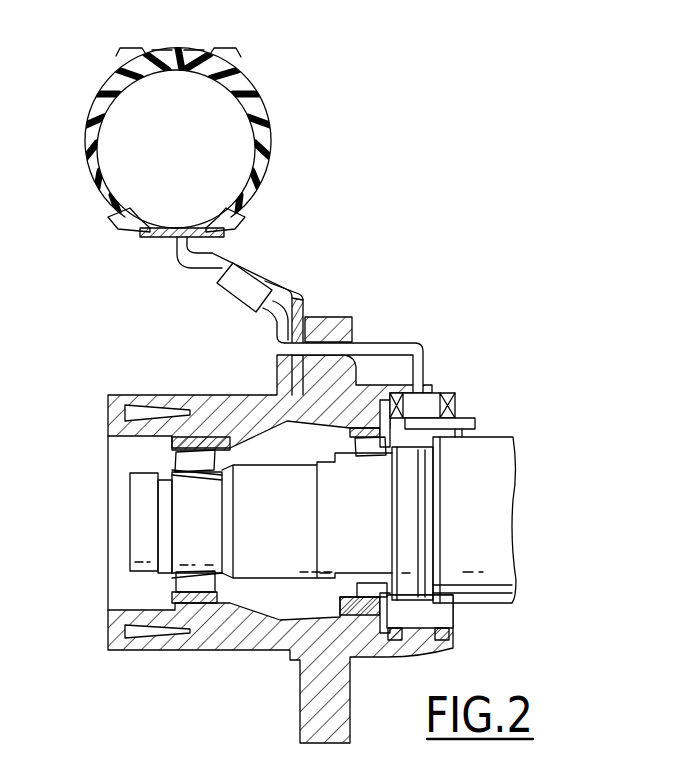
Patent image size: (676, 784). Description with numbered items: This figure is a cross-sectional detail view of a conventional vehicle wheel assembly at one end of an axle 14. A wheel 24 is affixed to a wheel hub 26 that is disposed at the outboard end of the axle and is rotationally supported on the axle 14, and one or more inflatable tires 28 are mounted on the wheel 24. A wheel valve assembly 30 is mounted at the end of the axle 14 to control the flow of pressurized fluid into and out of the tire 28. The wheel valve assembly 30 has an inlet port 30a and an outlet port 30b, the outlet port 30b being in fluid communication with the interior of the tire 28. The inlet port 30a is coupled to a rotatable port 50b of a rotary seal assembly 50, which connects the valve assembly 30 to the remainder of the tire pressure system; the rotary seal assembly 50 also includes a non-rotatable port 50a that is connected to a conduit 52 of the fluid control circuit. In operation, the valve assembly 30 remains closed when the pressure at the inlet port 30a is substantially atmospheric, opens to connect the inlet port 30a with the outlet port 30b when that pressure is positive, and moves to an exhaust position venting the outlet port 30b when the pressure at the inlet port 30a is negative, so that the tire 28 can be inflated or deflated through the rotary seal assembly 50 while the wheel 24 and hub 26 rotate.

The steer axle 14 is at (505, 574).
The wheel 24 is at (295, 287).
The wheel hub 26 is at (220, 655).
The inflatable tire 28 is at (270, 113).
The wheel valve assembly 30 is at (242, 280).
The inlet port 30a is at (260, 325).
The outlet port 30b is at (218, 281).
The rotary seal assembly 50 is at (445, 390).
The non-rotatable port 50a is at (452, 417).
The rotatable port 50b is at (432, 392).
The conduit 52 is at (460, 432).